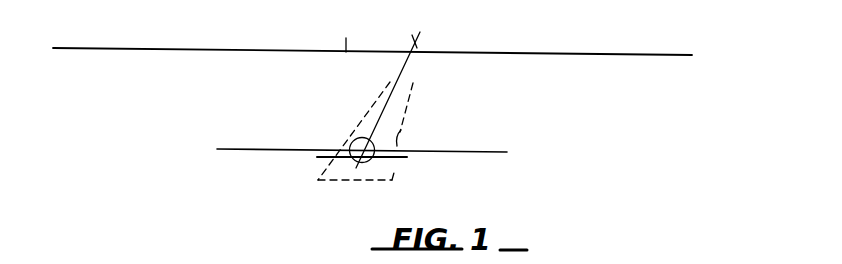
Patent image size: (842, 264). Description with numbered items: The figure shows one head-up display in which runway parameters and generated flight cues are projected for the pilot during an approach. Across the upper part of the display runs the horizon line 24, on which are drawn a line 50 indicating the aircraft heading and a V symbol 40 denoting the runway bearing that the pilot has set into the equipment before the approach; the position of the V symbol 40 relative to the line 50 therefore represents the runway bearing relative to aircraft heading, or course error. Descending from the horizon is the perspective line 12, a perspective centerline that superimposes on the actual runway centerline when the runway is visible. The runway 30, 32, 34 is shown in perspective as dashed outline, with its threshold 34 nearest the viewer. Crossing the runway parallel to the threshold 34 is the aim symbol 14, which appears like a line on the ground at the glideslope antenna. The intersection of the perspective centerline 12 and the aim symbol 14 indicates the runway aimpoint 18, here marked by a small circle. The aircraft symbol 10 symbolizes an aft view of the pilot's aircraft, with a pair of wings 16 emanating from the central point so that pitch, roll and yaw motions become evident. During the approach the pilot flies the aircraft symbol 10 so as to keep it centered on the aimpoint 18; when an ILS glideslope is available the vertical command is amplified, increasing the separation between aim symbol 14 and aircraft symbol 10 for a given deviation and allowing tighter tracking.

The aircraft symbol 10 is at (375, 148).
The perspective line 12 is at (403, 68).
The aim symbol 14 is at (403, 158).
The wings 16 is at (263, 151).
The aimpoint 18 is at (362, 150).
The horizon line 24 is at (558, 55).
The runway 30 is at (402, 132).
The runway 32 is at (413, 83).
The threshold 34 is at (342, 181).
The V symbol 40 is at (417, 45).
The line 50 is at (346, 38).